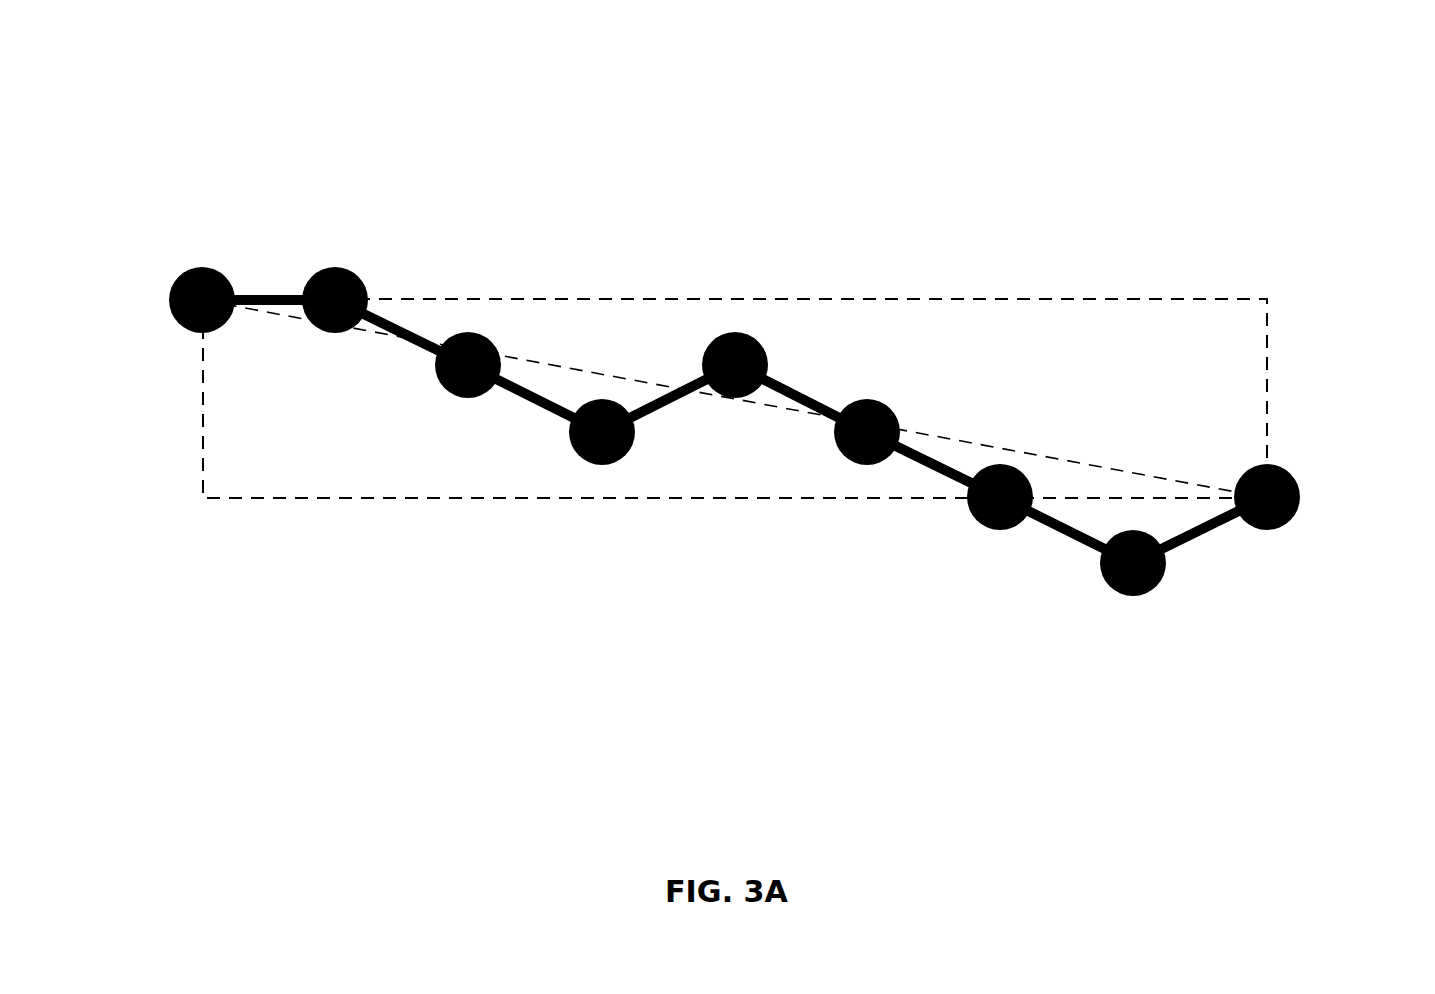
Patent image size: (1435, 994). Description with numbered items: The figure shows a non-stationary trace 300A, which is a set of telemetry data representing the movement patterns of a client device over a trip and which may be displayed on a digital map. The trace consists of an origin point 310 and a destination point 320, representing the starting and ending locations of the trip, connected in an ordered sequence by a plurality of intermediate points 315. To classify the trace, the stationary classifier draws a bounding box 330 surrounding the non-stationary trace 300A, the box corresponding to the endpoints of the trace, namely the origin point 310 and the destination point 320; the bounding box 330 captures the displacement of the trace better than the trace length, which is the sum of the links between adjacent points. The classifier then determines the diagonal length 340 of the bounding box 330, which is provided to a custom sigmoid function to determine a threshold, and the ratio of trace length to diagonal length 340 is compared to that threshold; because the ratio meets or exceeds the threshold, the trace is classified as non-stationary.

The non-stationary trace 300A is at (194, 68).
The origin point 310 is at (170, 300).
The intermediate points 315 is at (1133, 632).
The destination point 320 is at (1300, 497).
The bounding box 330 is at (840, 298).
The diagonal length 340 is at (548, 364).